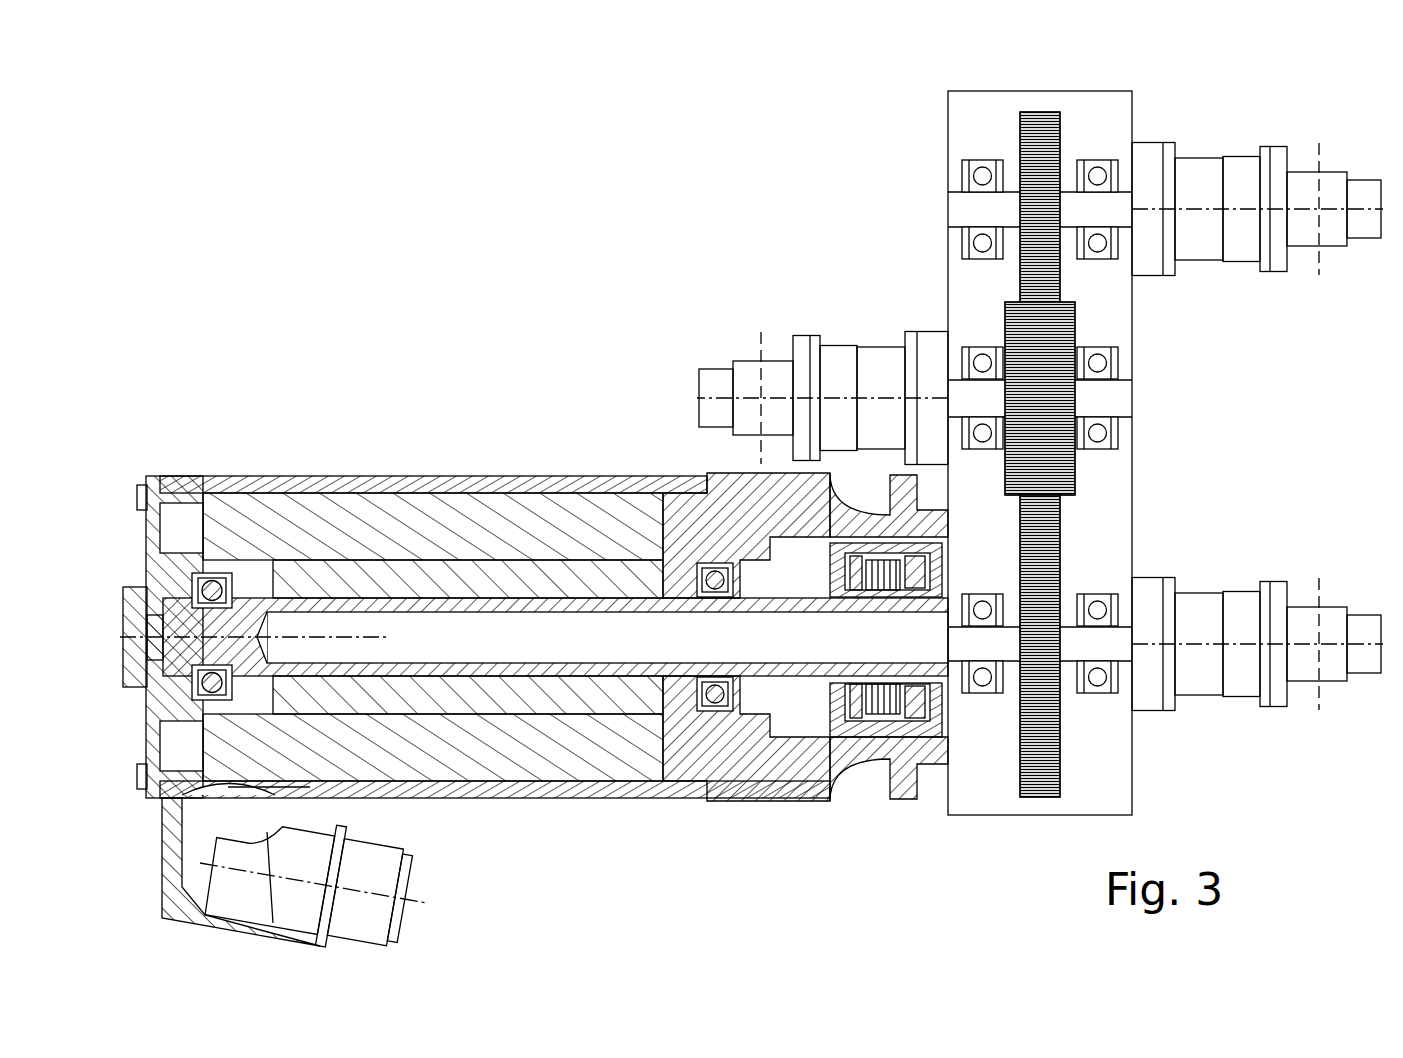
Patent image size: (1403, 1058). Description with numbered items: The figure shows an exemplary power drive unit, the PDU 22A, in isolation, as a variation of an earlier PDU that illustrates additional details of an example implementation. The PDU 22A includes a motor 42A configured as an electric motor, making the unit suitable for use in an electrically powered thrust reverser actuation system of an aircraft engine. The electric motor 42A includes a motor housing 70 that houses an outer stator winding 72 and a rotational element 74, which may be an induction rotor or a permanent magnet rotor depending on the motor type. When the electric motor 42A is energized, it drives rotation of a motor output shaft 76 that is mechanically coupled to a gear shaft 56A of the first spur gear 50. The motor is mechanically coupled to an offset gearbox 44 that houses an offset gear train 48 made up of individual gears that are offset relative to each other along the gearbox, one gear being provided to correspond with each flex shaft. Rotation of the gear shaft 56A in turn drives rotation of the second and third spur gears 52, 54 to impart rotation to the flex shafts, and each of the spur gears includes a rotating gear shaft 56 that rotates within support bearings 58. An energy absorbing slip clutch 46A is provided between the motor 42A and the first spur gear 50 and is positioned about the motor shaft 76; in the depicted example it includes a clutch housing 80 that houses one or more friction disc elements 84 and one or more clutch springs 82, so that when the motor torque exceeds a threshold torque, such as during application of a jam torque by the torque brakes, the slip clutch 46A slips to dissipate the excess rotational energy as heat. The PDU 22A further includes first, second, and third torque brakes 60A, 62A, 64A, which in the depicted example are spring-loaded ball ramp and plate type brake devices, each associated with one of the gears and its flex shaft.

The PDU 22A is at (473, 329).
The motor 42A is at (490, 800).
The offset gearbox 44 is at (957, 126).
The slip clutch 46A is at (770, 515).
The offset gear train 48 is at (1085, 419).
The first spur gear 50 is at (1048, 688).
The second spur gear 52 is at (1062, 450).
The third spur gear 54 is at (1040, 175).
The gear shaft 56 is at (1133, 385).
The gear shaft 56A is at (1027, 647).
The support bearings 58 is at (1133, 402).
The first torque brake 60A is at (1243, 695).
The second torque brake 62A is at (775, 360).
The third torque brake 64A is at (1237, 165).
The motor housing 70 is at (190, 476).
The outer stator winding 72 is at (433, 580).
The rotational element 74 is at (530, 580).
The motor output shaft 76 is at (597, 645).
The clutch housing 80 is at (805, 806).
The clutch springs 82 is at (855, 723).
The friction disc elements 84 is at (921, 715).